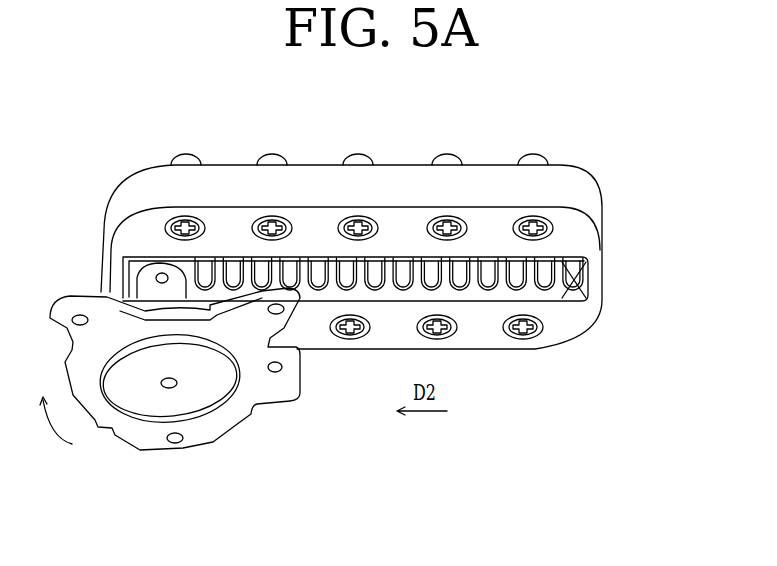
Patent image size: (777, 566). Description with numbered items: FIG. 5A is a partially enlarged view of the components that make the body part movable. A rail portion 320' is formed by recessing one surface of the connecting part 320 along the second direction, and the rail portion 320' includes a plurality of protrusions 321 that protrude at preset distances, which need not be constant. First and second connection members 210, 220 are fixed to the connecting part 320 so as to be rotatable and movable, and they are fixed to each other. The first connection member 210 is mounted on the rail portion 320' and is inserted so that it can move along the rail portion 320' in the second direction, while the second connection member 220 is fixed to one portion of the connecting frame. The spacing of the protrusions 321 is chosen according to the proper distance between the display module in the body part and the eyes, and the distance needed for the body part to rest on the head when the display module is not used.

The connecting part 320 is at (392, 251).
The rail portion 320' is at (406, 287).
The protrusions 321 is at (562, 292).
The second connection member 220 is at (95, 393).
The first connection member 210 is at (173, 288).